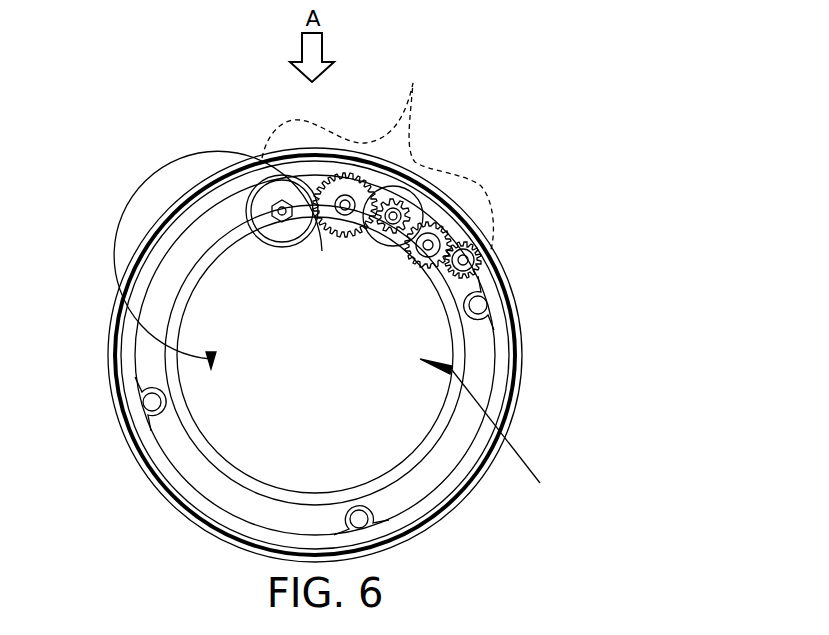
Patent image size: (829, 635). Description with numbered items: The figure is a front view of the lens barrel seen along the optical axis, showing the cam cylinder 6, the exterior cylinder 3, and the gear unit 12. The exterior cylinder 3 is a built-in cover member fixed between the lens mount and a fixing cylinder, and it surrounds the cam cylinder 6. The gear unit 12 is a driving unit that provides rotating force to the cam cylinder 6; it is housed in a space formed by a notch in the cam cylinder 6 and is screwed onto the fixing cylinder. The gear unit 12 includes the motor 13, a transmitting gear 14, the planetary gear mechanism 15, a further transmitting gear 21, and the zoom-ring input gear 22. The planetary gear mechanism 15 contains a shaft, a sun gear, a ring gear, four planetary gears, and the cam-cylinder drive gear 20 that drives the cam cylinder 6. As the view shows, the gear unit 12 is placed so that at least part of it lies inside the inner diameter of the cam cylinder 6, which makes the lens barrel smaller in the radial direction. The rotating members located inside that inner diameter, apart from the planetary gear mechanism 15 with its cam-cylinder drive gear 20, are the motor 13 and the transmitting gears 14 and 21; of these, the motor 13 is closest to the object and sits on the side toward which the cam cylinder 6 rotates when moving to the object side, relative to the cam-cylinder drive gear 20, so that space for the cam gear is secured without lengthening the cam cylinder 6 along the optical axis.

The exterior cylinder 3 is at (145, 252).
The cam cylinder 6 is at (177, 372).
The gear unit 12 is at (377, 153).
The motor 13 is at (276, 193).
The transmitting gear 14 is at (345, 192).
The planetary gear mechanism 15 is at (405, 198).
The cam-cylinder drive gear 20 is at (395, 214).
The transmitting gear 21 is at (437, 238).
The zoom-ring input gear 22 is at (470, 256).